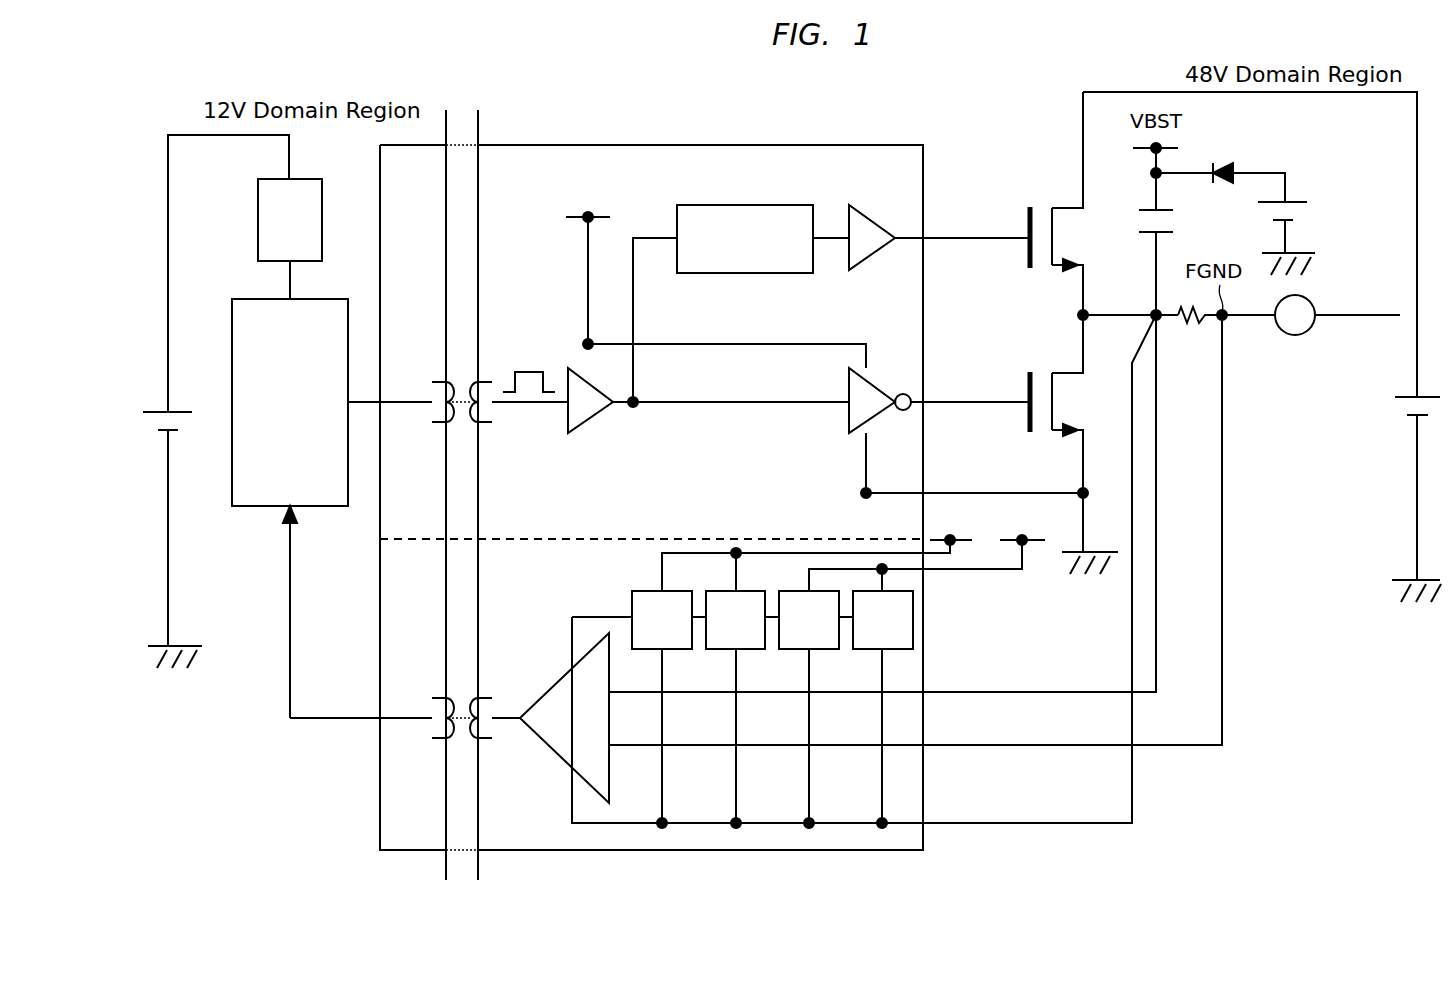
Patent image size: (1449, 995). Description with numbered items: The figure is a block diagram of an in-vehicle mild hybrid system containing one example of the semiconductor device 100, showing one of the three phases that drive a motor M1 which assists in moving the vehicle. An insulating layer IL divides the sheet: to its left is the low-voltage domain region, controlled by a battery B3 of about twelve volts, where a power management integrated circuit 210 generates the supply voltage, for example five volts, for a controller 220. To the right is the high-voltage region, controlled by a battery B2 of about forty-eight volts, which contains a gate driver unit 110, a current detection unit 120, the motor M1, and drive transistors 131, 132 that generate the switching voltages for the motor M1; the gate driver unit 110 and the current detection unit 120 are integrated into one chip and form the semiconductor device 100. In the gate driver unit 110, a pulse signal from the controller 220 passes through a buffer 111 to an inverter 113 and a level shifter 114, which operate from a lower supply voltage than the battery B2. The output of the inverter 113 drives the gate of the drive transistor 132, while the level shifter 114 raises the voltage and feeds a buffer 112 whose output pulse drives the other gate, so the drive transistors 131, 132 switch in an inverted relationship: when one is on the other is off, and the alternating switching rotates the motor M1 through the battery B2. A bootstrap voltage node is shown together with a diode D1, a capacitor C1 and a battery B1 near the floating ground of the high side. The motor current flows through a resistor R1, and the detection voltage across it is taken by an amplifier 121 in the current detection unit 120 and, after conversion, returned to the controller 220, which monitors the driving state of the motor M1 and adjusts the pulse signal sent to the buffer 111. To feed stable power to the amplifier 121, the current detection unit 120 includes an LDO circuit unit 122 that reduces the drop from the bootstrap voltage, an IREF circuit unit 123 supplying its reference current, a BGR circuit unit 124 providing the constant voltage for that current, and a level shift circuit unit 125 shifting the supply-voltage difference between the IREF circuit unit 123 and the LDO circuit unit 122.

The semiconductor device 100 is at (828, 130).
The gate driver unit 110 is at (650, 145).
The current detection unit 120 is at (930, 784).
The buffer 111 is at (580, 440).
The buffer 112 is at (886, 226).
The inverter 113 is at (891, 398).
The level shifter 114 is at (745, 205).
The amplifier 121 is at (572, 672).
The LDO circuit unit 122 is at (632, 591).
The IREF circuit unit 123 is at (820, 650).
The BGR circuit unit 124 is at (900, 650).
The level shift circuit unit 125 is at (745, 650).
The drive transistor 131 is at (1026, 214).
The drive transistor 132 is at (1026, 379).
The power management integrated circuit 210 is at (258, 220).
The controller 220 is at (232, 299).
The battery B1 is at (1300, 202).
The battery B2 is at (1410, 397).
The battery B3 is at (160, 412).
The capacitor C1 is at (1175, 235).
The diode D1 is at (1233, 163).
The resistor R1 is at (1190, 326).
The motor M1 is at (1295, 336).
The insulating layer IL is at (455, 125).